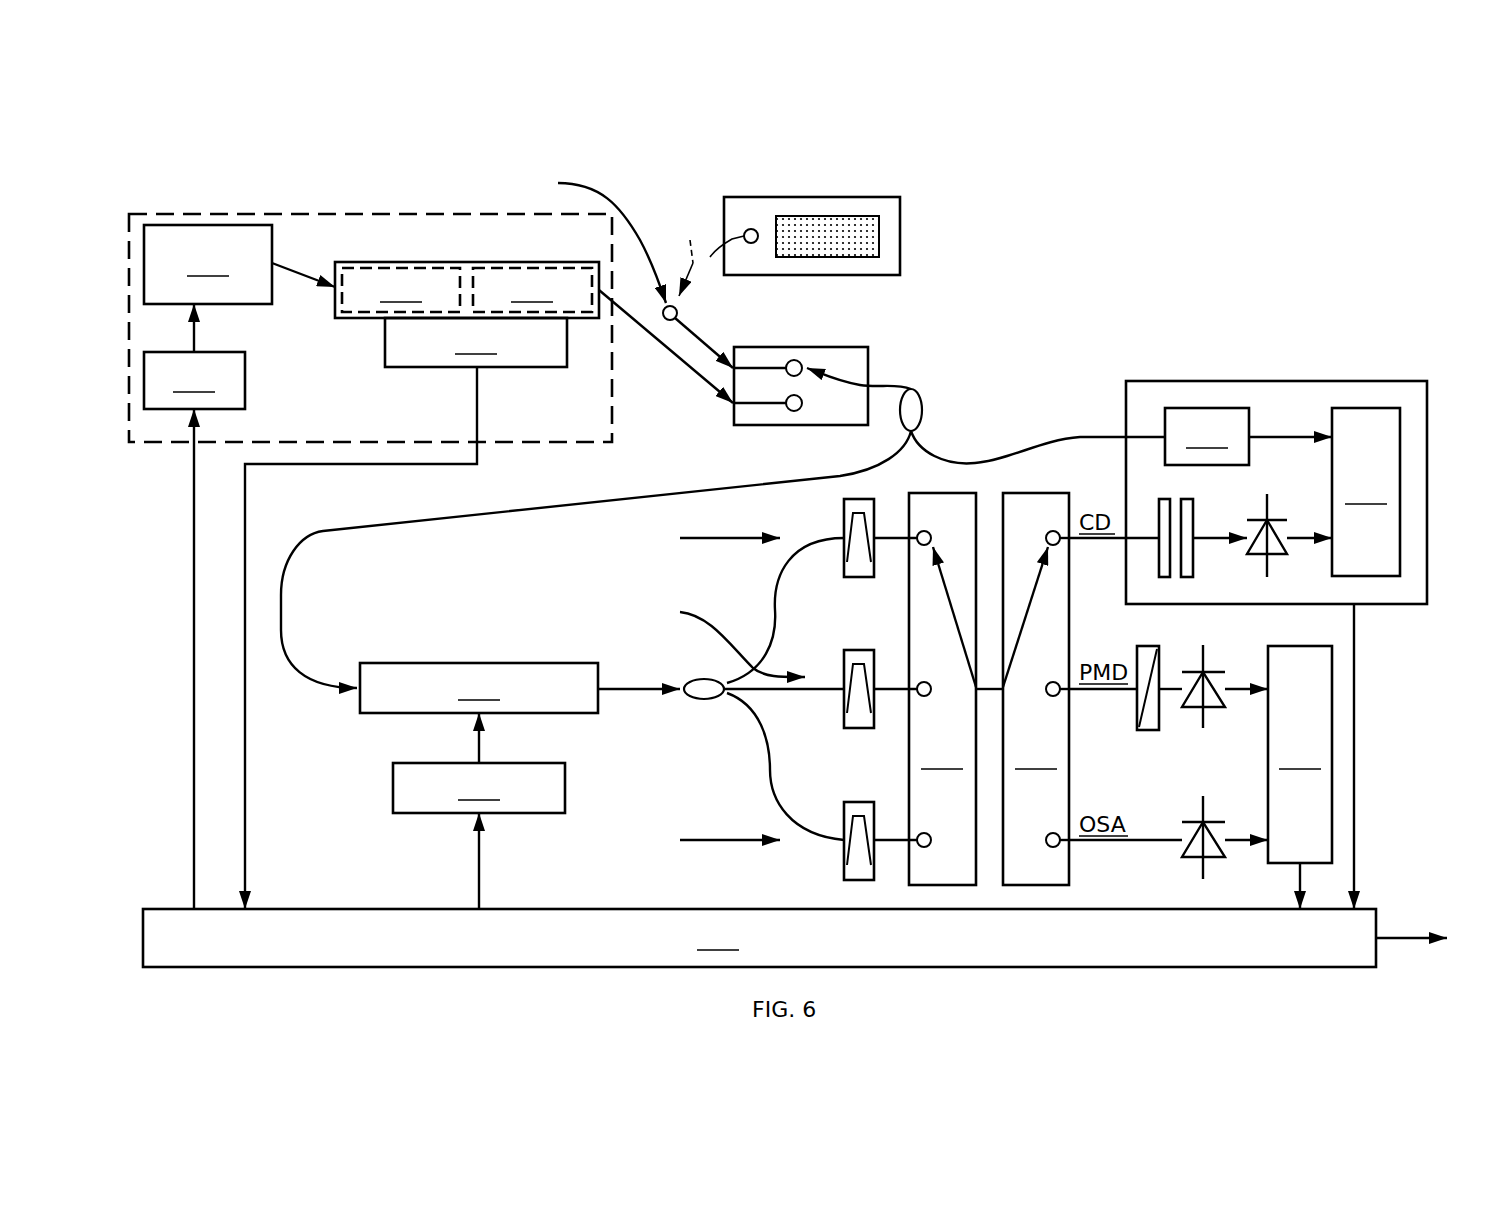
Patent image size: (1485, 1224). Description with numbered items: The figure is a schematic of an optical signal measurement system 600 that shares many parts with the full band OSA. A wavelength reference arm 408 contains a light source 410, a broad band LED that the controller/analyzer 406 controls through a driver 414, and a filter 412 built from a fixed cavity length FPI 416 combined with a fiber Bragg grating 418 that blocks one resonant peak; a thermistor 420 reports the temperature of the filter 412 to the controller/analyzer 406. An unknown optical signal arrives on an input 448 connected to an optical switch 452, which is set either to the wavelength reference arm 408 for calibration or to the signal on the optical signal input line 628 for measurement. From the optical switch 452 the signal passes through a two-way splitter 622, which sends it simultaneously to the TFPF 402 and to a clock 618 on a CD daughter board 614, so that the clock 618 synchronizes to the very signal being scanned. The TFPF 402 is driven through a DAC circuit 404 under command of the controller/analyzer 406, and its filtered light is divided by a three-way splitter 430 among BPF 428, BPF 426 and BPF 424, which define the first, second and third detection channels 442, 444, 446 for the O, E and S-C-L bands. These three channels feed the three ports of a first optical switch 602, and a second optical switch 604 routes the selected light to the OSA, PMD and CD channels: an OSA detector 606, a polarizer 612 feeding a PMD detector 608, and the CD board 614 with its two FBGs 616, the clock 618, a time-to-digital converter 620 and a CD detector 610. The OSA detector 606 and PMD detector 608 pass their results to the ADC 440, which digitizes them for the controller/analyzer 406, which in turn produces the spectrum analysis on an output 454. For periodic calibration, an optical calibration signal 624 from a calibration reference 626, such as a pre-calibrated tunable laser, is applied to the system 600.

The optical signal measurement system 600 is at (160, 191).
The wavelength reference arm 408 is at (340, 212).
The light source 410 is at (208, 264).
The filter 412 is at (510, 262).
The driver 414 is at (194, 380).
The fixed cavity length FPI 416 is at (401, 290).
The fiber Bragg grating 418 is at (532, 290).
The thermistor 420 is at (476, 342).
The optical signal input line 628 is at (640, 228).
The optical calibration signal 624 is at (716, 256).
The calibration reference 626 is at (835, 276).
The input 448 is at (707, 345).
The optical switch 452 is at (767, 426).
The two-way splitter 622 is at (925, 397).
The CD daughter board 614 is at (1248, 381).
The FBGs 616 is at (1175, 495).
The clock 618 is at (1207, 436).
The time-to-digital converter 620 is at (1366, 492).
The CD detector 610 is at (1262, 556).
The first detection channel 442 is at (707, 539).
The second detection channel 444 is at (720, 637).
The third detection channel 446 is at (707, 840).
The BPF 428 is at (841, 567).
The BPF 426 is at (841, 718).
The BPF 424 is at (841, 870).
The three-way splitter 430 is at (700, 700).
The TFPF 402 is at (479, 688).
The DAC circuit 404 is at (479, 788).
The controller/analyzer 406 is at (759, 938).
The first optical switch 602 is at (942, 689).
The second optical switch 604 is at (1036, 689).
The polarizer 612 is at (1147, 731).
The PMD detector 608 is at (1215, 706).
The OSA detector 606 is at (1195, 860).
The ADC 440 is at (1300, 754).
The output 454 is at (1390, 936).